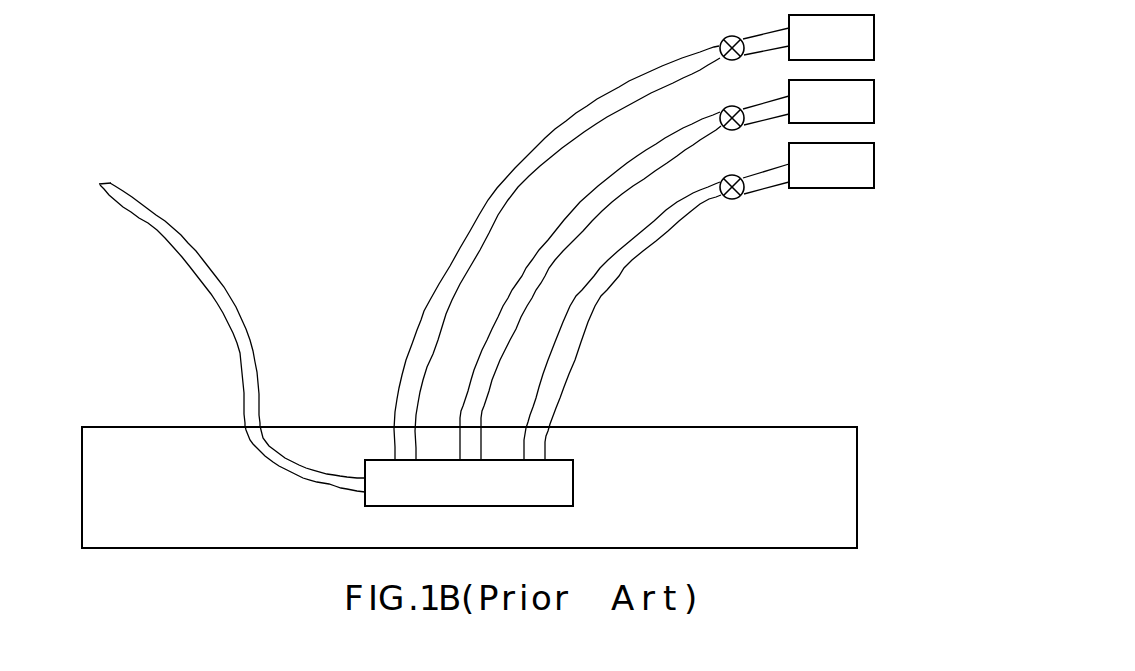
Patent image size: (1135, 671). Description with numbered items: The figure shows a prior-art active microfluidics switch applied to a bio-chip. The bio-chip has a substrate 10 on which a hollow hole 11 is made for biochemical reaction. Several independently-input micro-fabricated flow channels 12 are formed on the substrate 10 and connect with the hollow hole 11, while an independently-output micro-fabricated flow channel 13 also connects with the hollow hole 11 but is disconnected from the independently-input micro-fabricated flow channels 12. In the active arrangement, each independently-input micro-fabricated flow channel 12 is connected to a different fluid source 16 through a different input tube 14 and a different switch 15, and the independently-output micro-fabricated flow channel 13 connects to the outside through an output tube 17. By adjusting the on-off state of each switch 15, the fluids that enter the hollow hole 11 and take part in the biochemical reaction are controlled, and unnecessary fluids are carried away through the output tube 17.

The substrate 10 is at (131, 513).
The hollow hole 11 is at (485, 498).
The independently-input micro-fabricated flow channels 12 is at (537, 440).
The independently-output micro-fabricated flow channel 13 is at (279, 456).
The input tubes 14 is at (545, 252).
The switches 15 is at (718, 178).
The fluid sources 16 is at (874, 32).
The output tube 17 is at (232, 337).